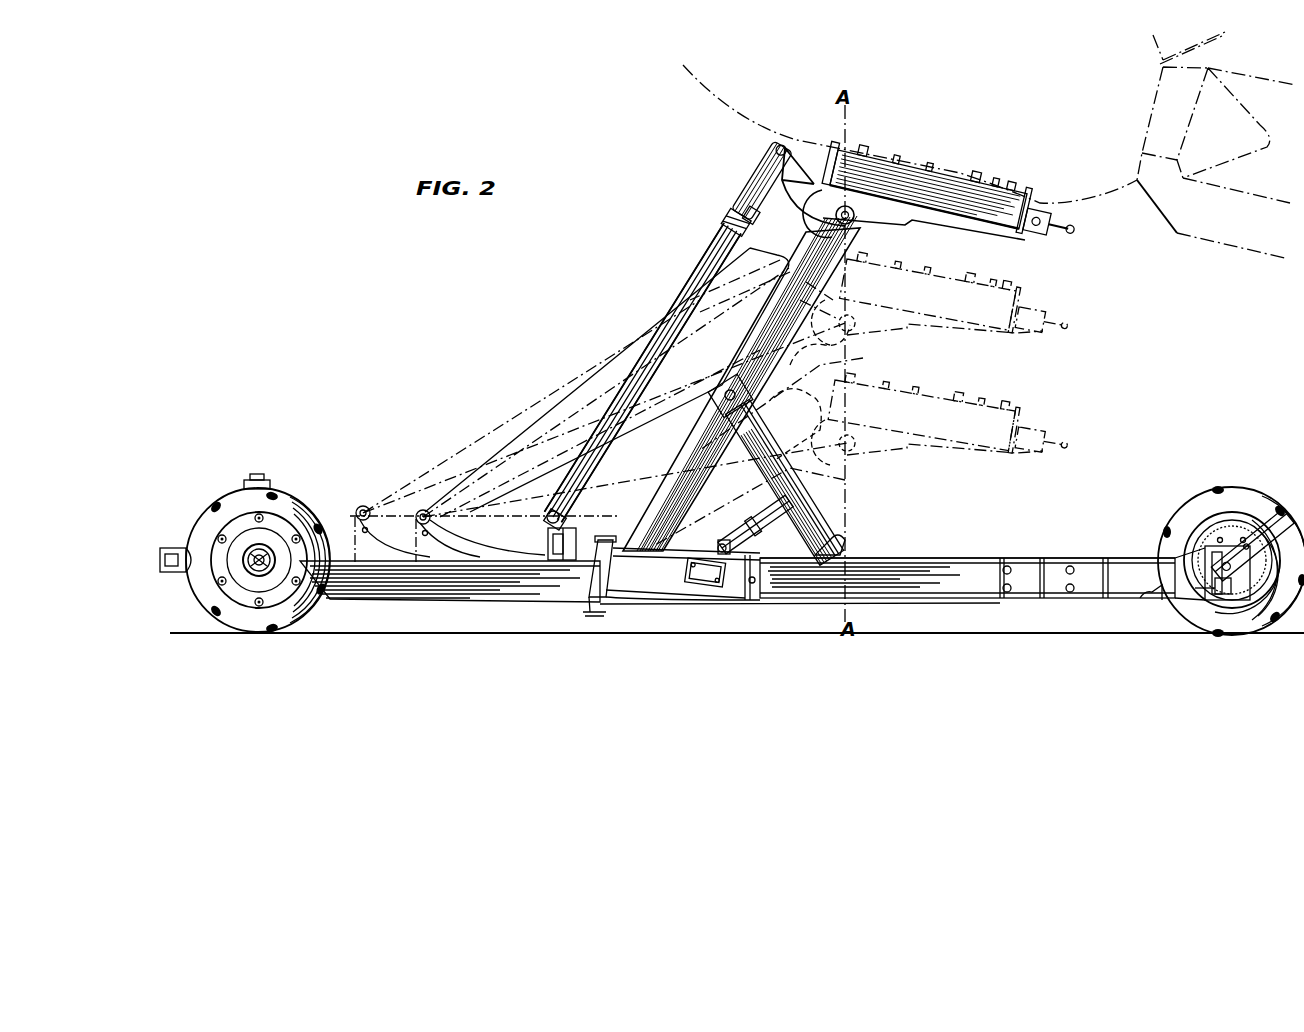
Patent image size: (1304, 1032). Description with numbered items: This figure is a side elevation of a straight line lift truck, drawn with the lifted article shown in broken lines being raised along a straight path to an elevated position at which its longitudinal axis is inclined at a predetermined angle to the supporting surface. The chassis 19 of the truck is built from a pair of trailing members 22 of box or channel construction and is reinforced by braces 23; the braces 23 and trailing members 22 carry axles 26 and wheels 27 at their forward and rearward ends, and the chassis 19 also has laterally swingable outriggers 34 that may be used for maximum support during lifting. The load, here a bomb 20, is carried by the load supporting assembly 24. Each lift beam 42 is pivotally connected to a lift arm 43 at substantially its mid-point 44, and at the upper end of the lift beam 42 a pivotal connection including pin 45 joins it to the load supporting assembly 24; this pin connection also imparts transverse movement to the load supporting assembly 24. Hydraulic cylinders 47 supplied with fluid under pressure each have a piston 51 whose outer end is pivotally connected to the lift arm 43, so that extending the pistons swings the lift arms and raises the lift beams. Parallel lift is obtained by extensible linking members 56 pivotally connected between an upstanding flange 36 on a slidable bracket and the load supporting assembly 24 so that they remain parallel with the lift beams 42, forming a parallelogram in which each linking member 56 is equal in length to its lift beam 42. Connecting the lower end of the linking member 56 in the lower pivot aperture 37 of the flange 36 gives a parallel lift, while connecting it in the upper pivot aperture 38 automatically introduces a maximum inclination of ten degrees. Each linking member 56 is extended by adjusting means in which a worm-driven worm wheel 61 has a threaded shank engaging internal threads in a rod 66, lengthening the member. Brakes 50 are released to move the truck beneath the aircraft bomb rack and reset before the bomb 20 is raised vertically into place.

The chassis 19 is at (1018, 558).
The bomb 20 is at (700, 107).
The trailing members 22 is at (975, 598).
The braces 23 is at (470, 603).
The load supporting assembly 24 is at (998, 243).
The axles 26 is at (262, 552).
The wheels 27 is at (307, 500).
The outriggers 34 is at (655, 578).
The flange 36 is at (525, 545).
The lower pivot aperture 37 is at (548, 527).
The upper pivot aperture 38 is at (420, 510).
The lift beams 42 is at (775, 356).
The lift arm 43 is at (828, 522).
The pivotal connection 44 is at (726, 392).
The pin 45 is at (852, 323).
The hydraulic cylinders 47 is at (730, 542).
The brakes 50 is at (1262, 520).
The piston 51 is at (780, 520).
The extensible linking members 56 is at (716, 244).
The worm wheel 61 is at (730, 210).
The rods 66 is at (765, 175).